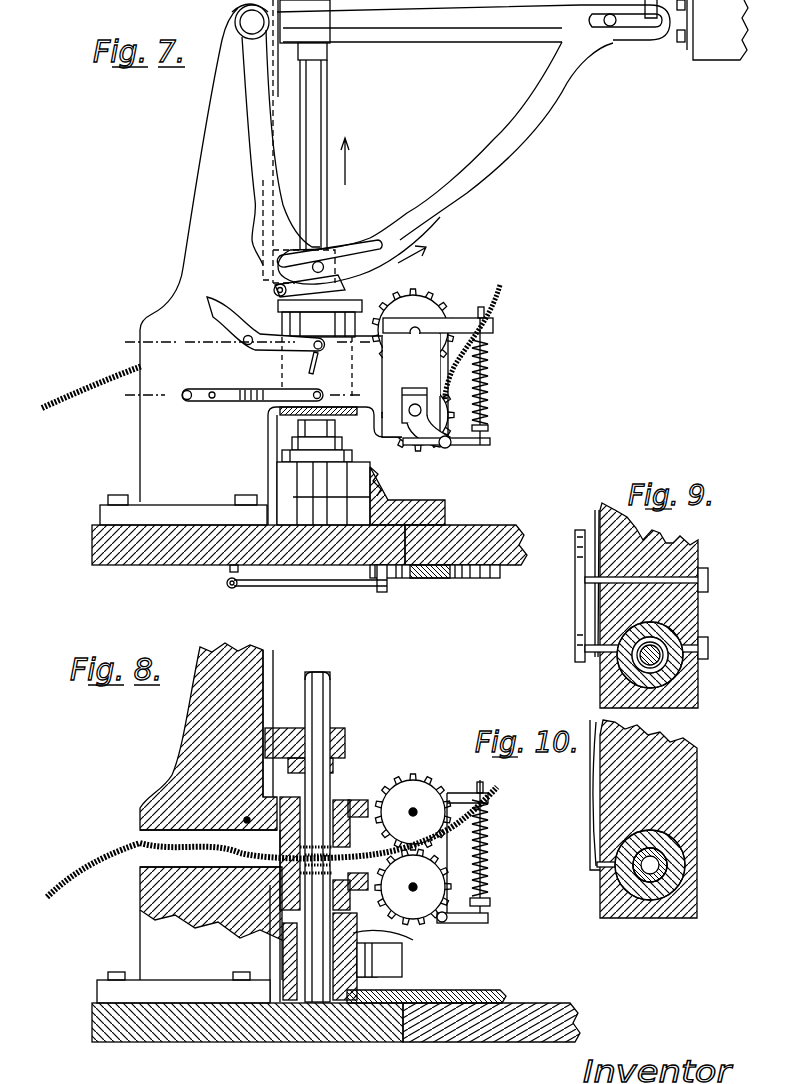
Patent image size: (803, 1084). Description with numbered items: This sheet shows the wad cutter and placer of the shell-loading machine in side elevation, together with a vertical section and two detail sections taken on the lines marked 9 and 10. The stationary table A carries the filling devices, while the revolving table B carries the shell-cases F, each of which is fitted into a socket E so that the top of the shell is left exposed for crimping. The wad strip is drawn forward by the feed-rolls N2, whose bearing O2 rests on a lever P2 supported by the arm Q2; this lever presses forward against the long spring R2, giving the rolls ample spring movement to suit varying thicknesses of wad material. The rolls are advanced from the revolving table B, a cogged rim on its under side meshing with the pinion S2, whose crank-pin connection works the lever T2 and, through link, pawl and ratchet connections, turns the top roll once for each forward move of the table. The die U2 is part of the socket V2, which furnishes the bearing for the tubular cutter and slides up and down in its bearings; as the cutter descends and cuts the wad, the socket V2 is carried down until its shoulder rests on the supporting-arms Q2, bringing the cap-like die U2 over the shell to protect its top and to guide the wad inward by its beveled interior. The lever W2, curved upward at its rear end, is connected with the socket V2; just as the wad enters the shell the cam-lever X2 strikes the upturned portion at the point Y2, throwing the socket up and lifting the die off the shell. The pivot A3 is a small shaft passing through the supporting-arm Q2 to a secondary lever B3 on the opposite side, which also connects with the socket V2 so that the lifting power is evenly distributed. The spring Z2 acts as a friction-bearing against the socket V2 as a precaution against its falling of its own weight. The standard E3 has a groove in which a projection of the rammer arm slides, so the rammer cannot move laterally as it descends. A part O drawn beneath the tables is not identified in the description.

In FIG. 7, the standard E3 is at (270, 147).
In FIG. 7, the cam-lever X2 is at (493, 150).
In FIG. 7, the socket V2 is at (355, 295).
In FIG. 9, the socket V2 is at (682, 670).
In FIG. 10, the socket V2 is at (680, 878).
In FIG. 8, the socket V2 is at (342, 797).
In FIG. 7, the point Y2 is at (263, 283).
In FIG. 7, the supporting-arm Q2 is at (360, 386).
In FIG. 9, the supporting-arm Q2 is at (660, 542).
In FIG. 10, the supporting-arm Q2 is at (670, 792).
In FIG. 7, the feed-rolls N2 is at (427, 310).
In FIG. 8, the feed-rolls N2 is at (413, 853).
In FIG. 7, the bearing O2 is at (420, 408).
In FIG. 7, the lever P2 is at (480, 440).
In FIG. 8, the lever P2 is at (470, 925).
In FIG. 7, the spring R2 is at (490, 405).
In FIG. 8, the spring R2 is at (480, 850).
In FIG. 7, the lever W2 is at (234, 320).
In FIG. 9, the lever W2 is at (578, 608).
In FIG. 7, the section line 9 is at (238, 342).
In FIG. 7, the section line 10 is at (230, 395).
In FIG. 7, the spring Z2 is at (240, 400).
In FIG. 10, the spring Z2 is at (590, 828).
In FIG. 7, the socket E is at (343, 445).
In FIG. 8, the socket E is at (379, 960).
In FIG. 7, the stationary table A is at (102, 551).
In FIG. 8, the stationary table A is at (103, 1020).
In FIG. 7, the revolving table B is at (470, 535).
In FIG. 8, the revolving table B is at (462, 1040).
In FIG. 7, the cylinder O is at (440, 577).
In FIG. 7, the pinion S2 is at (377, 590).
In FIG. 7, the lever T2 is at (229, 575).
In FIG. 9, the pivot A3 is at (700, 567).
In FIG. 9, the secondary lever B3 is at (703, 622).
In FIG. 8, the die U2 is at (282, 897).
In FIG. 8, the shell-case F is at (391, 948).